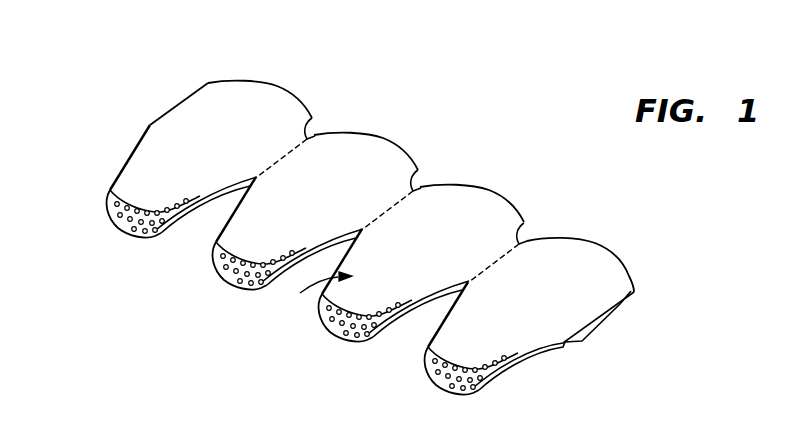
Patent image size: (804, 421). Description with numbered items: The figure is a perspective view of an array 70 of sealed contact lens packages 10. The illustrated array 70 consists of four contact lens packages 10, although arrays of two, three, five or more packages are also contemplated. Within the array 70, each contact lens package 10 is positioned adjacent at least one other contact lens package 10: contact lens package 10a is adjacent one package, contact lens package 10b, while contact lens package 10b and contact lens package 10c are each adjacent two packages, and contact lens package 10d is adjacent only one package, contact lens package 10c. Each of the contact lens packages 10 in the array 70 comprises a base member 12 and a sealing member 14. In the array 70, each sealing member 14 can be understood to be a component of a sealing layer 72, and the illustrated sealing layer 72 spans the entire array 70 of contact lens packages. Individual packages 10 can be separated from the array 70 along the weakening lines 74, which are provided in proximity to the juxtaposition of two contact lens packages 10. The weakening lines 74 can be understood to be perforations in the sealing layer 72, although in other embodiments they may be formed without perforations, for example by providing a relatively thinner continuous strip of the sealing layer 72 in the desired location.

The contact lens package 10 is at (283, 88).
The contact lens package 10a is at (233, 145).
The contact lens package 10b is at (233, 145).
The contact lens package 10c is at (421, 263).
The contact lens package 10d is at (529, 316).
The base member 12 is at (601, 321).
The sealing member 14 is at (131, 185).
The array 70 is at (495, 110).
The sealing layer 72 is at (300, 293).
The weakening lines 74 is at (313, 120).